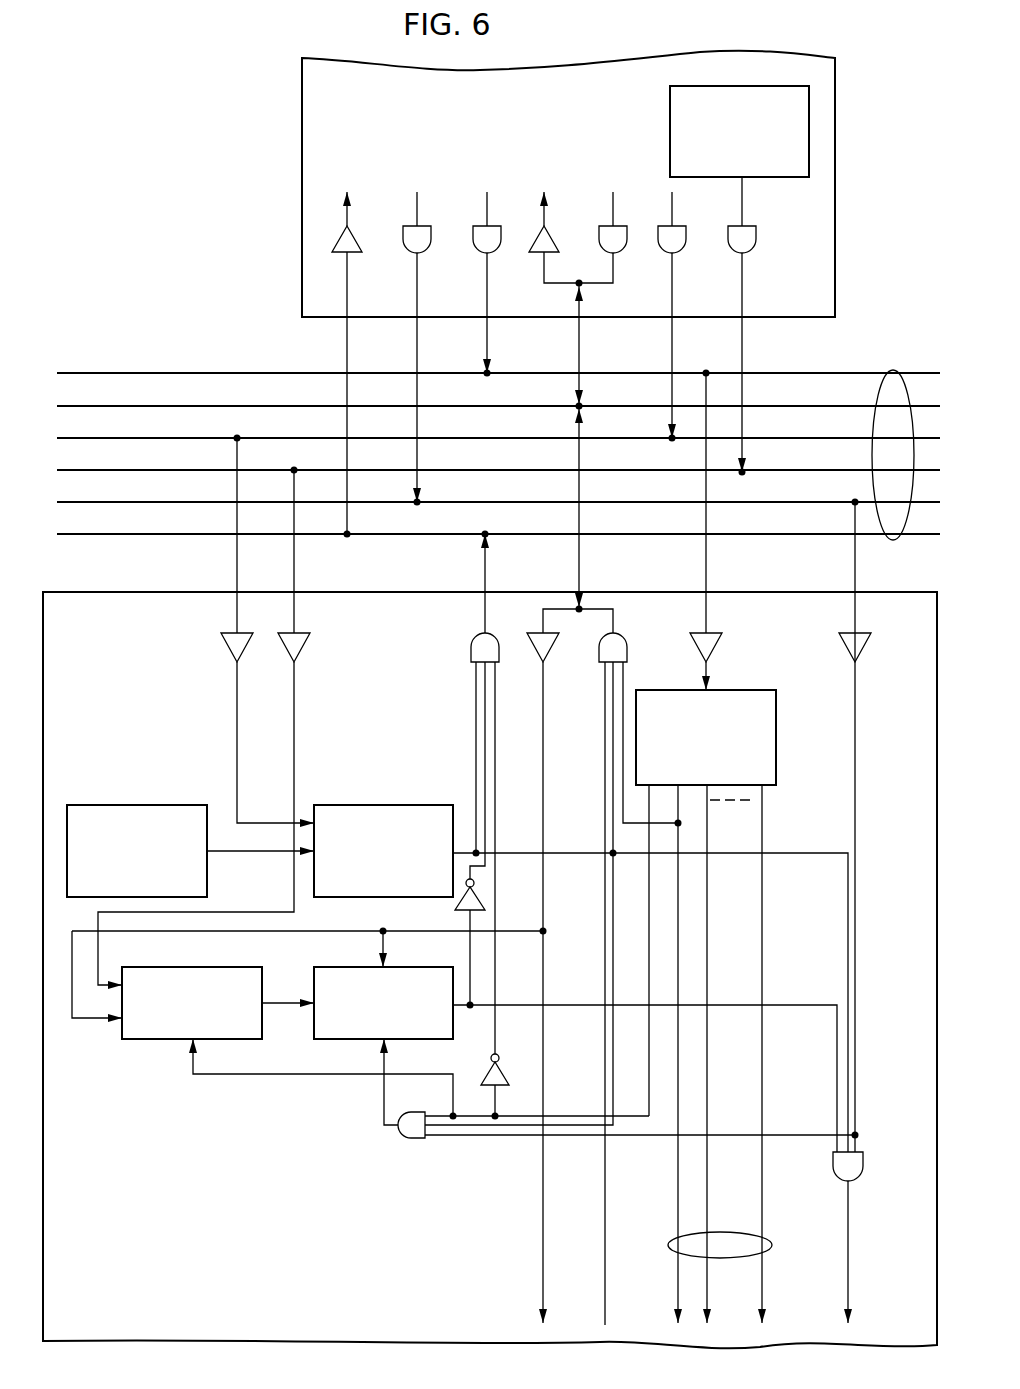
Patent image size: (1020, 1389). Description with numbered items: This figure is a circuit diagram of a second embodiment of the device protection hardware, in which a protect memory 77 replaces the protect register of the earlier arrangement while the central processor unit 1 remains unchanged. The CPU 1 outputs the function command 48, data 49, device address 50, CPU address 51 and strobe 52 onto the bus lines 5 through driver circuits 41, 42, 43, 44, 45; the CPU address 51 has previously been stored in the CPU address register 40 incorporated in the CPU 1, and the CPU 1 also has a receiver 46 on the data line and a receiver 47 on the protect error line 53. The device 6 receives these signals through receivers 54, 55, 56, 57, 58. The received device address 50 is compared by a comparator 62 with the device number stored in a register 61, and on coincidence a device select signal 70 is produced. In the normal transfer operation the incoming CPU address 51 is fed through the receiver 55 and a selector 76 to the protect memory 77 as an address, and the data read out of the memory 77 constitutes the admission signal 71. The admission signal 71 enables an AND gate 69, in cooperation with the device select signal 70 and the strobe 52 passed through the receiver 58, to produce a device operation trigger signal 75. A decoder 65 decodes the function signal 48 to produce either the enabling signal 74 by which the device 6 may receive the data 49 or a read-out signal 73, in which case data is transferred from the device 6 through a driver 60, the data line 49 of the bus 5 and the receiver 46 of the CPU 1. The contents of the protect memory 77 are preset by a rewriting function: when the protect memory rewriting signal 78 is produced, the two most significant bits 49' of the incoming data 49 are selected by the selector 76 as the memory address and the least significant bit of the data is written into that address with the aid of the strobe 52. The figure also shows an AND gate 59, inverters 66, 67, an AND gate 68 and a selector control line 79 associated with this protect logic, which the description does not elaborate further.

The central processor unit 1 is at (302, 110).
The bus lines 5 is at (893, 370).
The device 6 is at (900, 572).
The CPU address register 40 is at (670, 120).
The driver circuit 41 is at (757, 240).
The driver circuit 42 is at (687, 240).
The driver circuit 43 is at (640, 227).
The driver circuit 44 is at (474, 242).
The driver circuit 45 is at (444, 230).
The receiver 46 is at (564, 221).
The receiver 47 is at (354, 242).
The function command signal 48 is at (483, 370).
The data 49 is at (483, 457).
The two most significant bits of the data 49' is at (95, 993).
The device address signal 50 is at (483, 433).
The CPU address signal 51 is at (483, 465).
The strobe signal 52 is at (483, 498).
The protect error signal 53 is at (483, 530).
The receiver 54 is at (223, 643).
The receiver 55 is at (310, 641).
The receiver 56 is at (535, 638).
The receiver 57 is at (695, 650).
The receiver 58 is at (842, 648).
The AND gate 59 is at (470, 639).
The driver 60 is at (601, 636).
The register 61 is at (140, 805).
The comparator 62 is at (390, 805).
The decoder 65 is at (777, 722).
The inverter 66 is at (482, 896).
The inverter 67 is at (505, 1076).
The AND gate 68 is at (408, 1140).
The AND gate 69 is at (864, 1168).
The device select signal 70 is at (577, 853).
The admission signal 71 is at (577, 1005).
The read-out signal 73 is at (678, 1178).
The data receive enabling signal 74 is at (676, 1242).
The device operation trigger signal 75 is at (852, 1243).
The selector 76 is at (190, 970).
The protect memory 77 is at (314, 978).
The protect memory rewriting signal 78 is at (577, 1117).
The selector control line 79 is at (246, 1078).